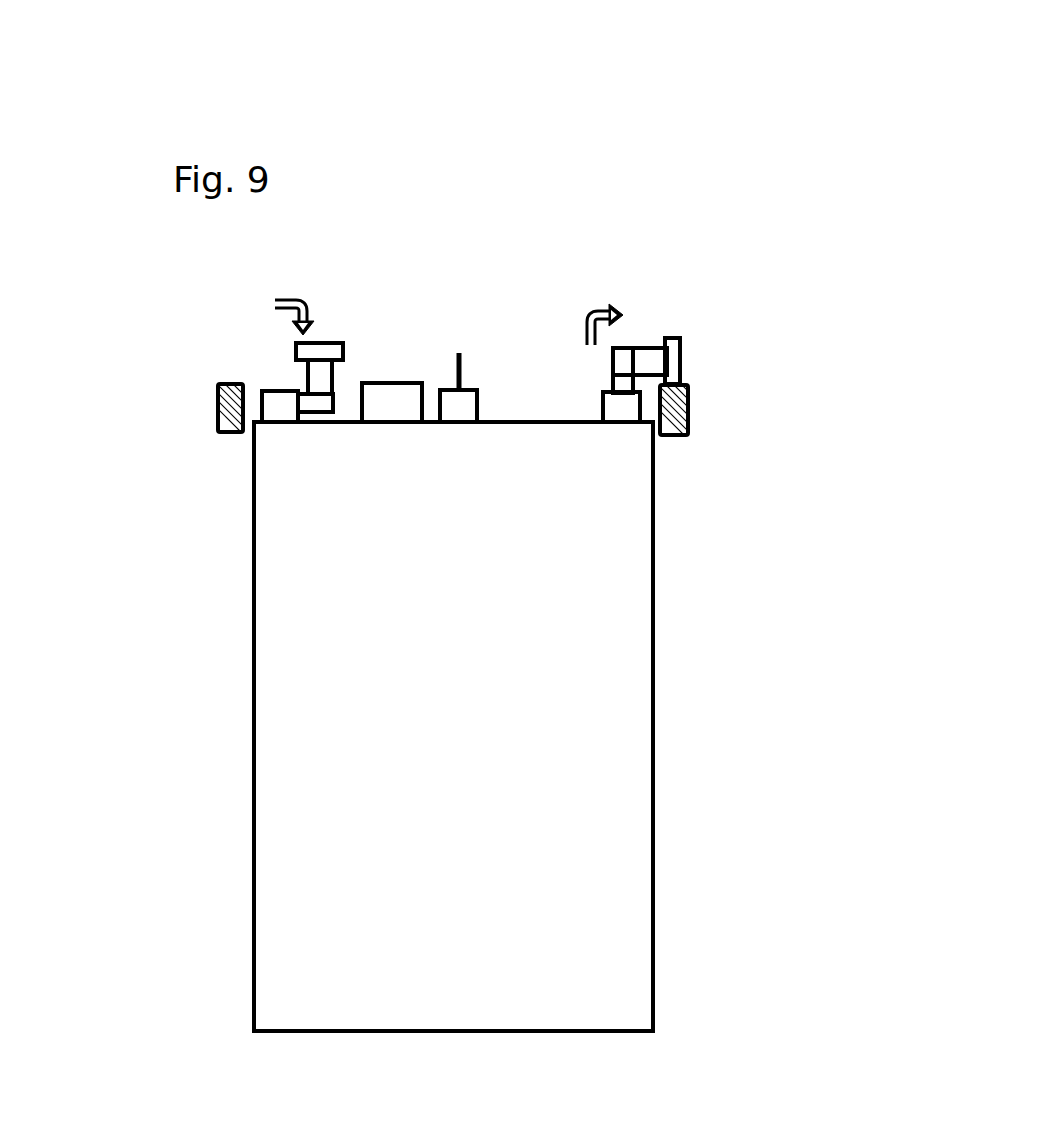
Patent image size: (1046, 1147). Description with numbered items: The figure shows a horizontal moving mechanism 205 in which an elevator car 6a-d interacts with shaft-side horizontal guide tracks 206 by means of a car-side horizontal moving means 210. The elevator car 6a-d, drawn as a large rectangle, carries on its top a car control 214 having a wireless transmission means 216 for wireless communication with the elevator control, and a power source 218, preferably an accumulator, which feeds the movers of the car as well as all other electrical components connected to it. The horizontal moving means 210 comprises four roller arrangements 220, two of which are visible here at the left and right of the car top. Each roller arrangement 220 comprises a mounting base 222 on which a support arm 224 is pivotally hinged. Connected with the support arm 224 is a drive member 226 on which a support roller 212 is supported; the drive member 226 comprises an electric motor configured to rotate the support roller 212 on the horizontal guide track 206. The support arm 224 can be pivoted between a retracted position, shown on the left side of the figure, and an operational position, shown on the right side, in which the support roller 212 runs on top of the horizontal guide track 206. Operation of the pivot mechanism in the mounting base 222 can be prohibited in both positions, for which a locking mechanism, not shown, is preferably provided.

The elevator car 6a-d is at (577, 788).
The horizontal moving mechanism 205 is at (466, 182).
The horizontal moving means 210 is at (477, 253).
The horizontal guide track 206 is at (217, 410).
The support roller 212 is at (318, 345).
The car control 214 is at (458, 403).
The wireless transmission means 216 is at (457, 353).
The power source 218 is at (392, 410).
The roller arrangement 220 is at (253, 353).
The mounting base 222 is at (282, 412).
The support arm 224 is at (313, 405).
The drive member 226 is at (322, 377).